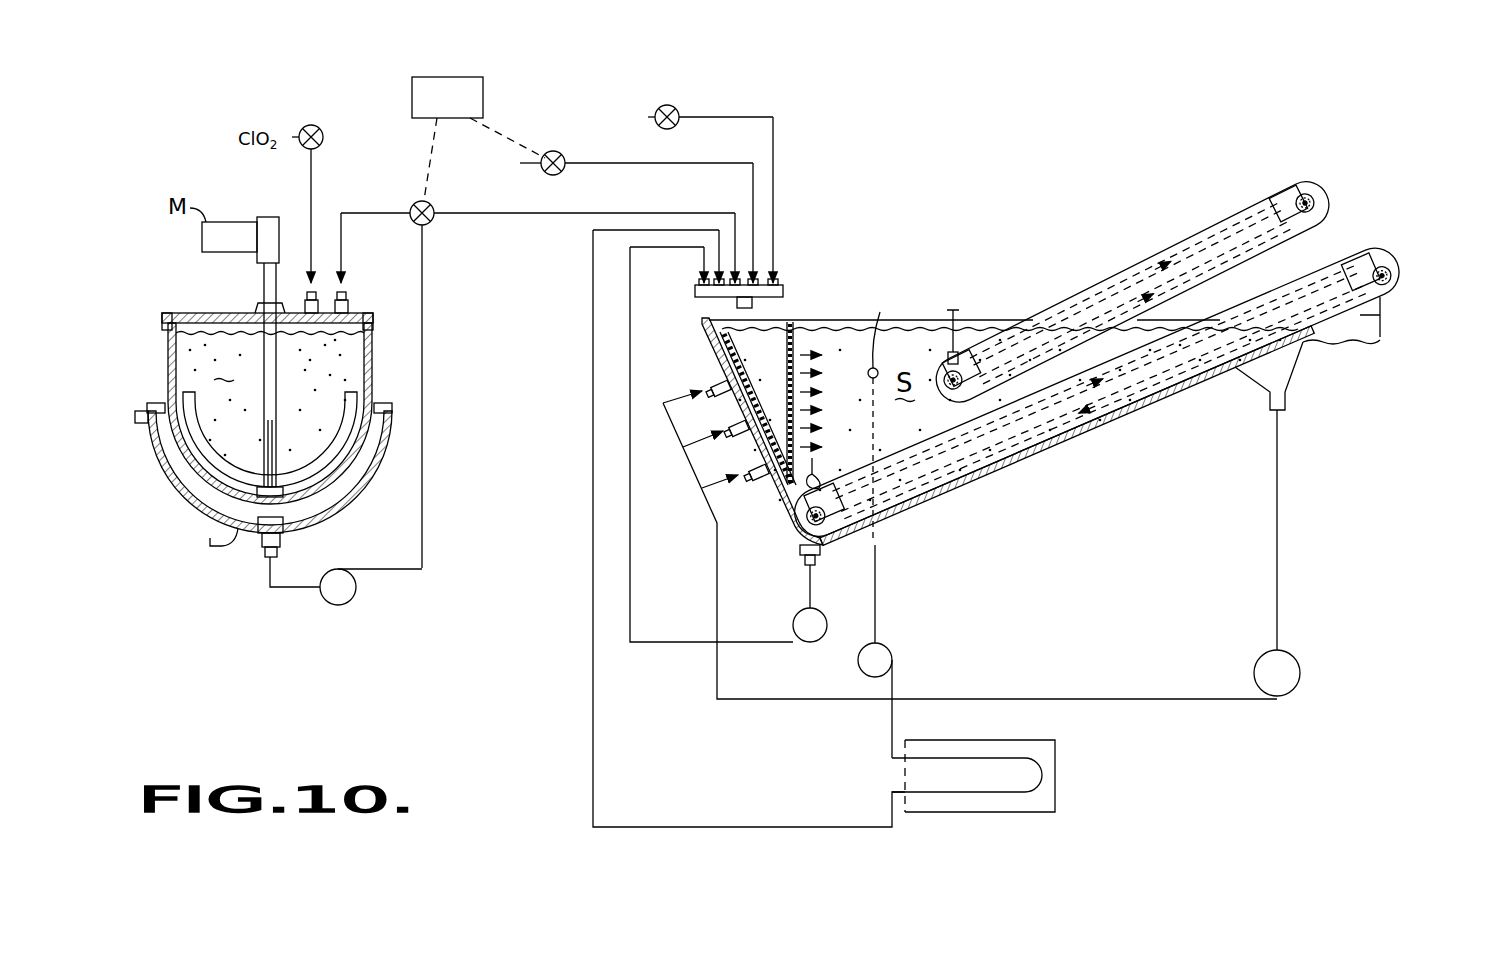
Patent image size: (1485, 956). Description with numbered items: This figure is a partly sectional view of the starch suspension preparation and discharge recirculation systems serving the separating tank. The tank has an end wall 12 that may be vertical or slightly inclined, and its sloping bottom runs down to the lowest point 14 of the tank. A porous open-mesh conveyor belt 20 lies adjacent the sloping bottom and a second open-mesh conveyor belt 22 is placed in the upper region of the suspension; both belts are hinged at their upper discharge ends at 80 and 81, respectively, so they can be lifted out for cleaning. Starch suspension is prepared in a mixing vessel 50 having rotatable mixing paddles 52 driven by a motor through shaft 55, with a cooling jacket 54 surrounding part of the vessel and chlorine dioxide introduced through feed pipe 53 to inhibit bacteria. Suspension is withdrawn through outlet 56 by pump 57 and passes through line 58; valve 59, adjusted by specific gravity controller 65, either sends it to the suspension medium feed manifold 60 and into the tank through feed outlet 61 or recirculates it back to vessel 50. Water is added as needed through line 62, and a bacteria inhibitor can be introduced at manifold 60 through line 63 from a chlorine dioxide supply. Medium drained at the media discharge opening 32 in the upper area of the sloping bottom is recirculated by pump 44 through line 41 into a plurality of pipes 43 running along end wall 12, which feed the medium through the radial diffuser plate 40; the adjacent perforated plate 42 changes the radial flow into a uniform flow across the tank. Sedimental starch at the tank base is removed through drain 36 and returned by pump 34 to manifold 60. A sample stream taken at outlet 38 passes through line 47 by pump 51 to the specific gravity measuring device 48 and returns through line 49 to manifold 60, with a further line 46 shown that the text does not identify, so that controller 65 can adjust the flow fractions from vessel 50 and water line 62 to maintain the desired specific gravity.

The end wall 12 is at (781, 506).
The lowest point of the tank 14 is at (805, 541).
The conveyor belt 20 is at (859, 481).
The second conveyor belt 22 is at (1107, 292).
The media discharge opening 32 is at (1288, 388).
The pump 34 is at (793, 628).
The drain 36 is at (805, 566).
The outlet 38 is at (886, 413).
The radial diffuser plate 40 is at (704, 346).
The line 41 is at (716, 578).
The perforated plate 42 is at (797, 322).
The pipes 43 is at (735, 420).
The pump 44 is at (1298, 660).
The conduit 46 is at (679, 650).
The line 47 is at (878, 590).
The specific gravity measuring device 48 is at (1057, 759).
The line 49 is at (592, 660).
The mixing vessel 50 is at (372, 352).
The pump 51 is at (890, 648).
The mixing paddles 52 is at (185, 396).
The feed pipe 53 is at (310, 292).
The cooling jacket 54 is at (366, 486).
The shaft 55 is at (278, 430).
The outlet 56 is at (262, 557).
The pump 57 is at (342, 606).
The line 58 is at (376, 213).
The valve 59 is at (432, 223).
The suspension medium feed manifold 60 is at (783, 286).
The feed outlet 61 is at (737, 303).
The water line 62 is at (668, 163).
The line 63 is at (723, 117).
The specific gravity controller 65 is at (483, 80).
The hinge 80 is at (1400, 301).
The hinge 81 is at (1300, 280).